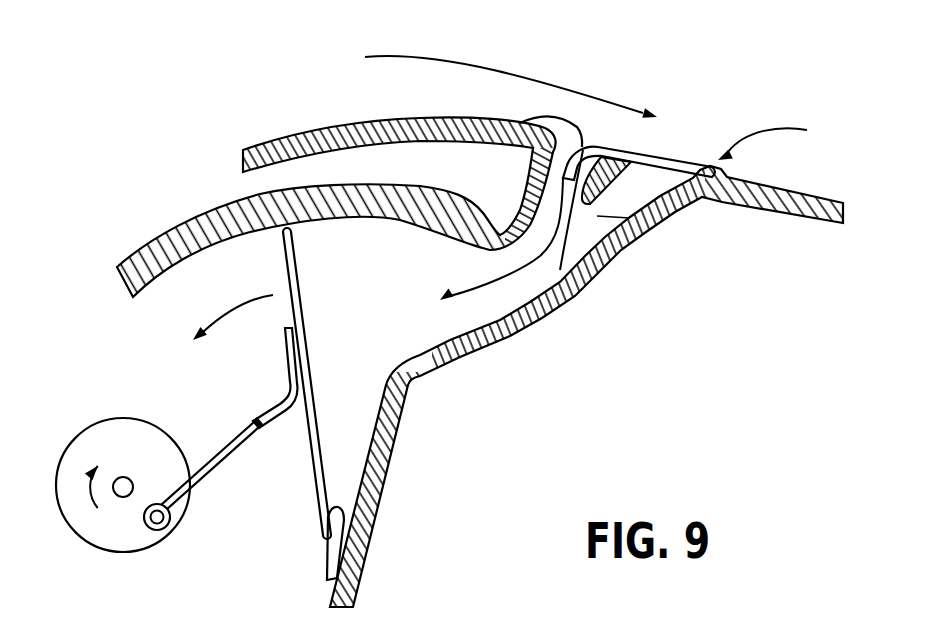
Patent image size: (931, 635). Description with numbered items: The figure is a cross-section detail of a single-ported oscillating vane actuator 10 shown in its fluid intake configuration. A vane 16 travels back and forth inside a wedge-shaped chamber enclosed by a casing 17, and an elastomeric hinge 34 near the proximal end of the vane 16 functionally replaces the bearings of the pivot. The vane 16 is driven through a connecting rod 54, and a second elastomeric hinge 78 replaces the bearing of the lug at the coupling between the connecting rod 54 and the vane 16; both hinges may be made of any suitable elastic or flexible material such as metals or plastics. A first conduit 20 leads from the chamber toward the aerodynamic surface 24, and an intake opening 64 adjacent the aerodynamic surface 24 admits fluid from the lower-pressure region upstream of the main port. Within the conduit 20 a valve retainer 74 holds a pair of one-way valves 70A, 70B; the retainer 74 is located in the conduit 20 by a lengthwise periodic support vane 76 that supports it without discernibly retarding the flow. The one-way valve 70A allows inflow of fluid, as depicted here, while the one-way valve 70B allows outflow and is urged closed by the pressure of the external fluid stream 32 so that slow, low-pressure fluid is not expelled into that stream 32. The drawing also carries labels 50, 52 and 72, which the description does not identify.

The oscillating vane actuator 10 is at (650, 349).
The vane 16 is at (300, 307).
The casing 17 is at (403, 518).
The first conduit 20 is at (425, 274).
The aerodynamic surface 24 is at (277, 143).
The fluid stream 32 is at (492, 80).
The elastomeric hinge 34 is at (324, 562).
The cam wheel 50 is at (83, 537).
The cam follower 52 is at (150, 543).
The connecting rod 54 is at (210, 480).
The intake opening 64 is at (573, 128).
The one-way valve 70A is at (592, 145).
The one-way valve 70B is at (683, 153).
The secondary airflow 72 is at (777, 136).
The valve retainer 74 is at (623, 158).
The support vane 76 is at (630, 218).
The elastomeric hinge 78 is at (287, 377).